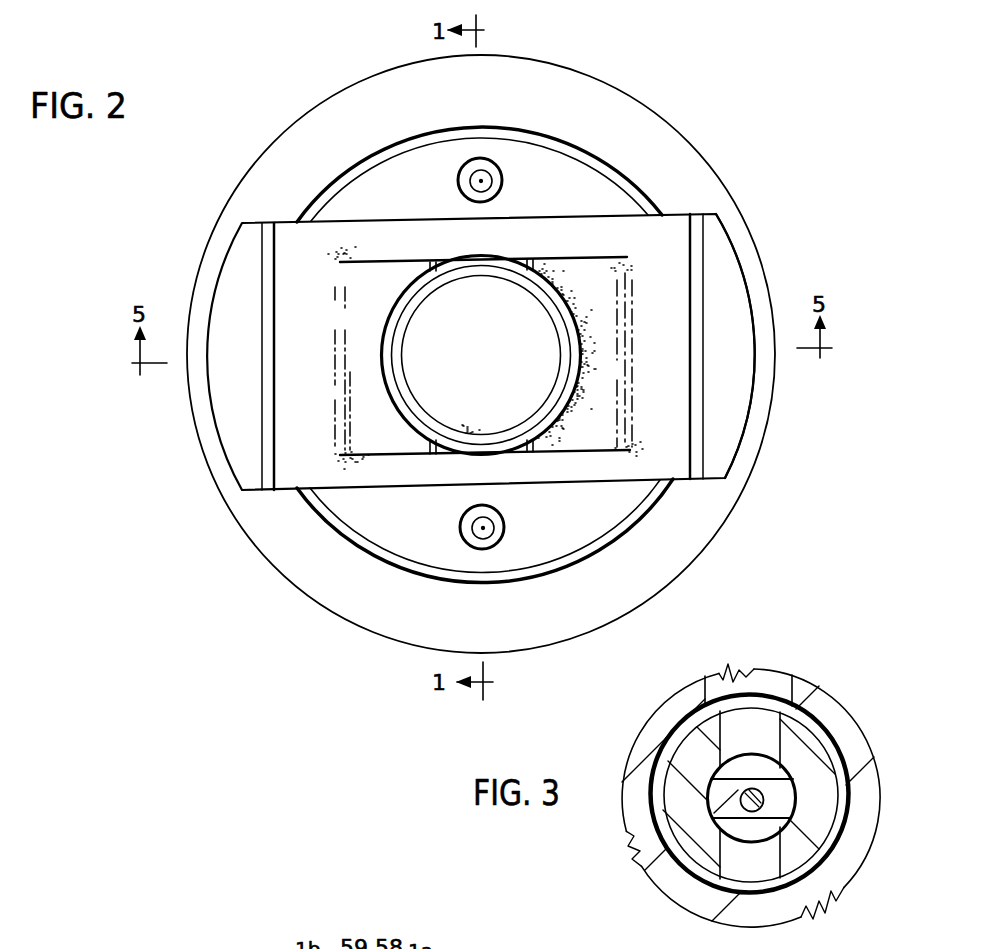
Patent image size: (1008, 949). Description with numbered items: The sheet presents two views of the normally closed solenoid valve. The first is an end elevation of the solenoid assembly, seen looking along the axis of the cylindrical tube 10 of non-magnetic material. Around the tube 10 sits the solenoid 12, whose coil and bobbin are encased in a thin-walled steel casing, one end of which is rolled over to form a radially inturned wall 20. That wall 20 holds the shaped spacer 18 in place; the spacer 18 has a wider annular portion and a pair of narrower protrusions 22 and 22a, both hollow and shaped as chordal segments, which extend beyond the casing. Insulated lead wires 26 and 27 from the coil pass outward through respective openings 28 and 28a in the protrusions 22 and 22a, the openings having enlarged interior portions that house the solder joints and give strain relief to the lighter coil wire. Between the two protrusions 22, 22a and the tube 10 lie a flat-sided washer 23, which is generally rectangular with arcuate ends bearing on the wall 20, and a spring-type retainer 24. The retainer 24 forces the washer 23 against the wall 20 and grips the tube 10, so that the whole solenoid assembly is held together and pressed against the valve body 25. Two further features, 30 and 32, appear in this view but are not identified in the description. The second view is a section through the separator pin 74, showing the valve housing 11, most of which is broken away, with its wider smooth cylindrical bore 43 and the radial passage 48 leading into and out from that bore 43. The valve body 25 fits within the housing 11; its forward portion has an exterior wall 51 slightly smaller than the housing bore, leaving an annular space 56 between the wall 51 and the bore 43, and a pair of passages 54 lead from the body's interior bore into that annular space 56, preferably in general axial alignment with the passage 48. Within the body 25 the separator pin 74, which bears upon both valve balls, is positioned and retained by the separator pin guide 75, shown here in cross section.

In FIG. 2, the cylindrical tube 10 is at (425, 291).
In FIG. 2, the solenoid 12 is at (322, 92).
In FIG. 2, the shaped spacer 18 is at (596, 201).
In FIG. 2, the radially inturned wall 20 is at (652, 121).
In FIG. 2, the protrusion 22 is at (458, 180).
In FIG. 2, the protrusion 22a is at (463, 527).
In FIG. 2, the flat-sided washer 23 is at (741, 365).
In FIG. 2, the spring-type retainer 24 is at (672, 308).
In FIG. 2, the lead wire 26 is at (483, 180).
In FIG. 2, the lead wire 27 is at (484, 527).
In FIG. 2, the opening 28 is at (477, 166).
In FIG. 2, the opening 28a is at (478, 544).
In FIG. 2, the ring 30 is at (548, 403).
In FIG. 2, the central bore 32 is at (494, 368).
In FIG. 3, the valve housing 11 is at (645, 752).
In FIG. 3, the cylindrical bore 43 is at (815, 720).
In FIG. 3, the radial passage 48 is at (727, 662).
In FIG. 3, the exterior wall 51 is at (837, 833).
In FIG. 3, the passages 54 is at (763, 737).
In FIG. 3, the annular space 56 is at (843, 778).
In FIG. 3, the separator pin 74 is at (738, 800).
In FIG. 3, the separator pin guide 75 is at (762, 817).
In FIG. 3, the valve body 25 is at (816, 848).